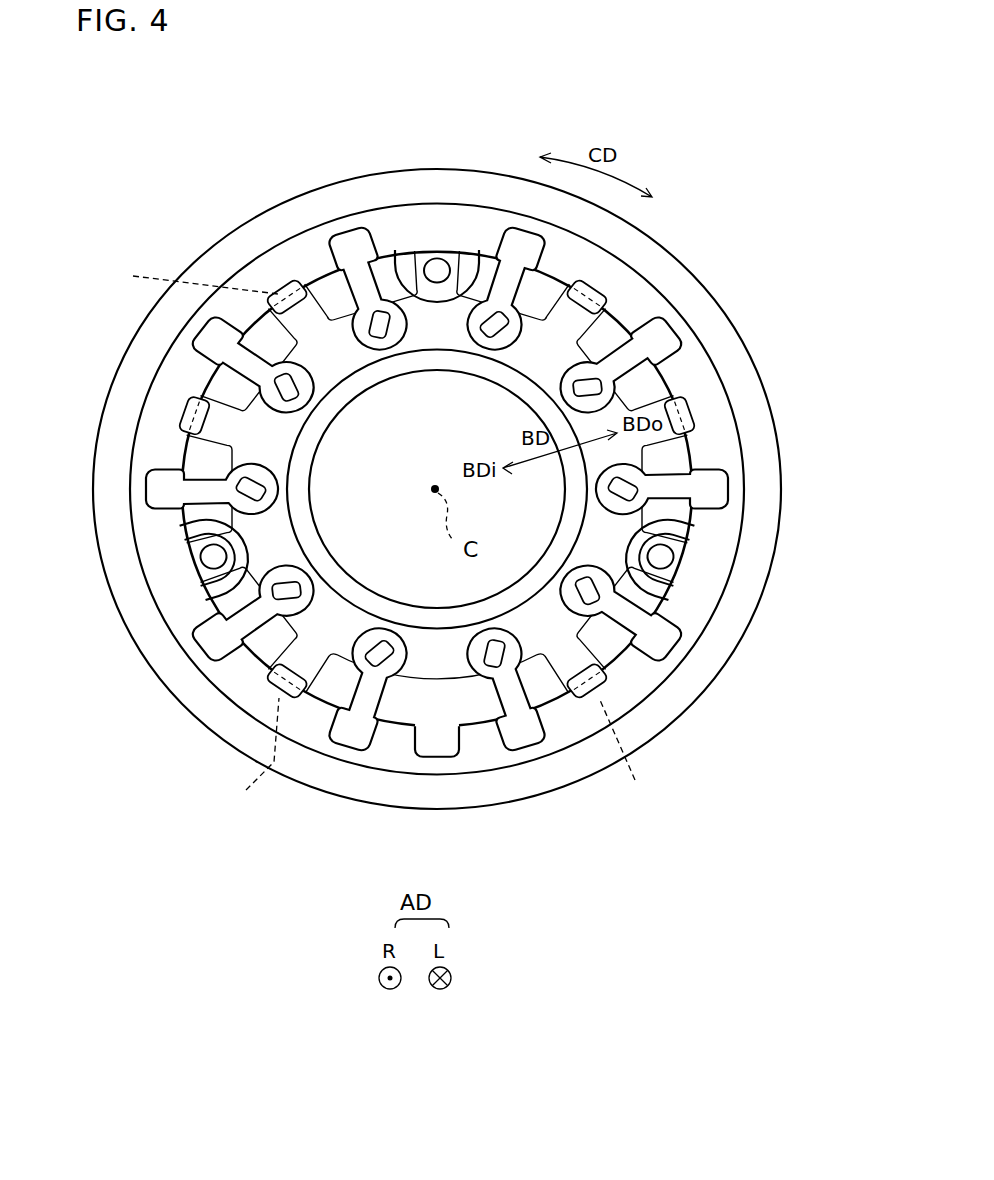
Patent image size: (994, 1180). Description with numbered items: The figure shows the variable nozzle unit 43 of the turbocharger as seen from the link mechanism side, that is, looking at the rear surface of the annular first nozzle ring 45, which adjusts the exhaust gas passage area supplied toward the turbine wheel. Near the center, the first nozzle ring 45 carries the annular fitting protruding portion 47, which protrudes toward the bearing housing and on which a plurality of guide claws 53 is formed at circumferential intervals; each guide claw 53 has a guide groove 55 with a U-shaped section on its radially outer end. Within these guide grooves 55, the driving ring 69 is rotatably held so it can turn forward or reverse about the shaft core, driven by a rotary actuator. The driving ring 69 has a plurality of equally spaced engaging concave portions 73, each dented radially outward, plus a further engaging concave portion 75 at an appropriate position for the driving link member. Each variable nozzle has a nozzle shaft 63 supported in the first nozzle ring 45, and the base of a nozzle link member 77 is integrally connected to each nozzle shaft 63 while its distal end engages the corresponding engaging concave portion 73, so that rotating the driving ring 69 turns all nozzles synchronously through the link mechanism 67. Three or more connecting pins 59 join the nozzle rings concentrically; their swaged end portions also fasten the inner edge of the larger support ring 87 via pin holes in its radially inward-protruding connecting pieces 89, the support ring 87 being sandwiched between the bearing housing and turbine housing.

The variable nozzle unit 43 is at (472, 86).
The first nozzle ring 45 is at (302, 458).
The fitting protruding portion 47 is at (355, 392).
The guide claw 53 is at (276, 288).
The guide groove 55 is at (378, 538).
The connecting pin 59 is at (437, 266).
The nozzle shaft 63 is at (381, 330).
The link mechanism 67 is at (129, 412).
The driving ring 69 is at (740, 485).
The engaging concave portion 73 is at (338, 250).
The engaging concave portion 75 is at (437, 757).
The nozzle link member 77 is at (330, 278).
The support ring 87 is at (362, 186).
The connecting piece 89 is at (437, 296).